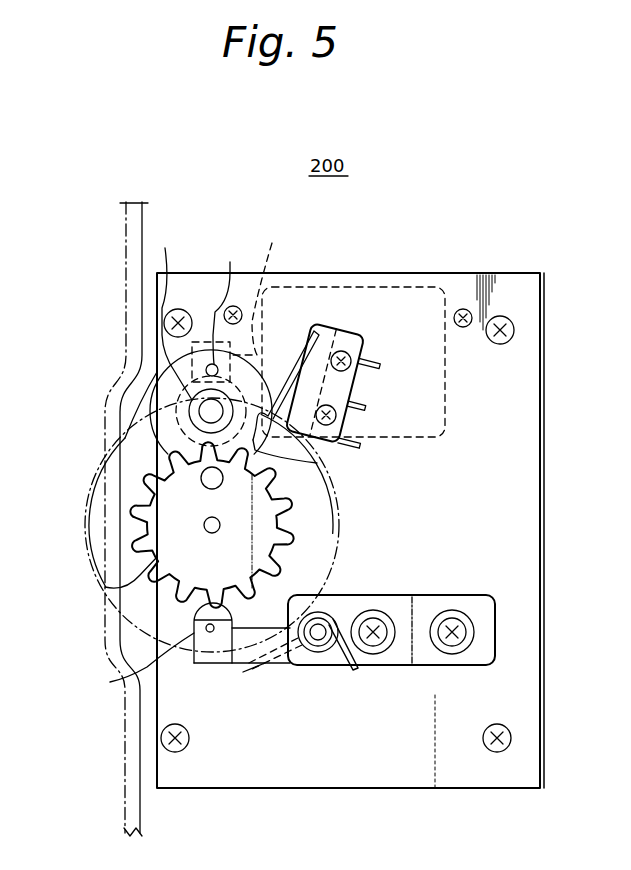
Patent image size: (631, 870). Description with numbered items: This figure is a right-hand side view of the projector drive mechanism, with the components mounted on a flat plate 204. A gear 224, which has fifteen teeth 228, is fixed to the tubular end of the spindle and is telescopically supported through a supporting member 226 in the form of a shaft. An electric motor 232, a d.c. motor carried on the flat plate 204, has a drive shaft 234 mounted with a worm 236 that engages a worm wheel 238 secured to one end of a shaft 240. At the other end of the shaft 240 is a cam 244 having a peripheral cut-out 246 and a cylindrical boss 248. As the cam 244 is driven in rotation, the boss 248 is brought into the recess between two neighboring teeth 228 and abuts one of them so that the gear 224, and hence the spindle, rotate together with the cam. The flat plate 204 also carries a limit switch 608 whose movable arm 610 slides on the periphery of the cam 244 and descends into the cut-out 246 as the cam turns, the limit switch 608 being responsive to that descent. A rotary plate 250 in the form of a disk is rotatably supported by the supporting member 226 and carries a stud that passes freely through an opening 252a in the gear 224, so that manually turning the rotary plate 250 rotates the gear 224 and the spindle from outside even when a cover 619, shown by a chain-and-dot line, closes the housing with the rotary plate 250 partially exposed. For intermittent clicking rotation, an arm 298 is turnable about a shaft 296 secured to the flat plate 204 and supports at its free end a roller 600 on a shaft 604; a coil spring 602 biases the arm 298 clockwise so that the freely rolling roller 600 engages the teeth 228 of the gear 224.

The flat plate 204 is at (512, 273).
The gear 224 is at (283, 520).
The supporting member 226 is at (212, 534).
The teeth 228 is at (104, 588).
The electric motor 232 is at (350, 287).
The drive shaft 234 is at (263, 289).
The worm 236 is at (205, 342).
The worm wheel 238 is at (155, 378).
The shaft 240 is at (252, 408).
The cam 244 is at (169, 316).
The peripheral cut-out 246 is at (317, 463).
The cylindrical boss 248 is at (230, 304).
The rotary plate 250 is at (90, 488).
The opening 252a is at (205, 487).
The shaft 296 is at (320, 652).
The arm 298 is at (234, 666).
The roller 600 is at (110, 681).
The coil spring 602 is at (335, 612).
The shaft 604 is at (202, 667).
The limit switch 608 is at (352, 332).
The movable arm 610 is at (295, 368).
The cover 619 is at (133, 205).